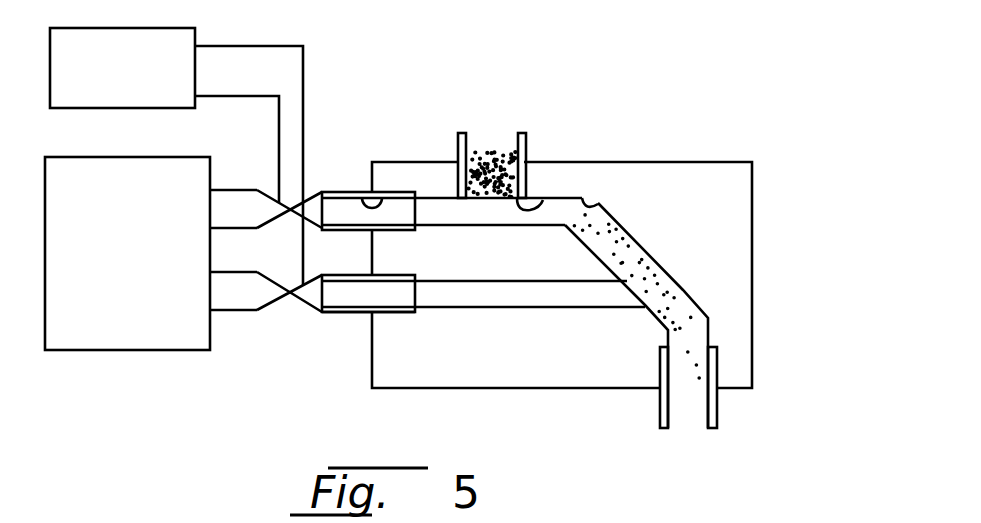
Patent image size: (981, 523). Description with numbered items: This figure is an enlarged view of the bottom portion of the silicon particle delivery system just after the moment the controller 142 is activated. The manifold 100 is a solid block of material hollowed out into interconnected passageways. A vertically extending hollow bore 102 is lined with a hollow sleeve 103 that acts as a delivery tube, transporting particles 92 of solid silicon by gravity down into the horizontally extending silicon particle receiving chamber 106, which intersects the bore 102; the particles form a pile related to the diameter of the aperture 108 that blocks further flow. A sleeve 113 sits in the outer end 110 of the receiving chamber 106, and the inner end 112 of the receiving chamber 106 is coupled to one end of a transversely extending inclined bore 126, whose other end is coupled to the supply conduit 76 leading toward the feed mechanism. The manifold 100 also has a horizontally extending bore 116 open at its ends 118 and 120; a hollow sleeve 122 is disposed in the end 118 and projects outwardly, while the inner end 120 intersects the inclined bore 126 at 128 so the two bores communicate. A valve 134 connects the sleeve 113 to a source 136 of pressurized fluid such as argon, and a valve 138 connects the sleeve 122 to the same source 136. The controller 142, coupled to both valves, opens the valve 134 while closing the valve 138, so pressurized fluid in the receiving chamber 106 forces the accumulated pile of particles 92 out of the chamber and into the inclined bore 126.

The controller 142 is at (95, 28).
The source of pressurized fluid 136 is at (92, 157).
The valve 134 is at (268, 192).
The valve 138 is at (268, 312).
The sleeve 113 is at (342, 192).
The hollow sleeve 122 is at (343, 315).
The outer end of bore 110 is at (363, 195).
The silicon particle receiving chamber 106 is at (427, 200).
The manifold 100 is at (755, 160).
The hollow bore 102 is at (480, 153).
The hollow sleeve 103 is at (527, 148).
The particles 92 is at (493, 158).
The aperture 108 is at (543, 200).
The inner end of receiving chamber 112 is at (602, 204).
The inclined bore 126 is at (650, 267).
The intersection 128 is at (653, 285).
The bore 116 is at (452, 303).
The end of bore 118 is at (372, 307).
The inner end of bore 120 is at (642, 308).
The supply conduit 76 is at (715, 413).